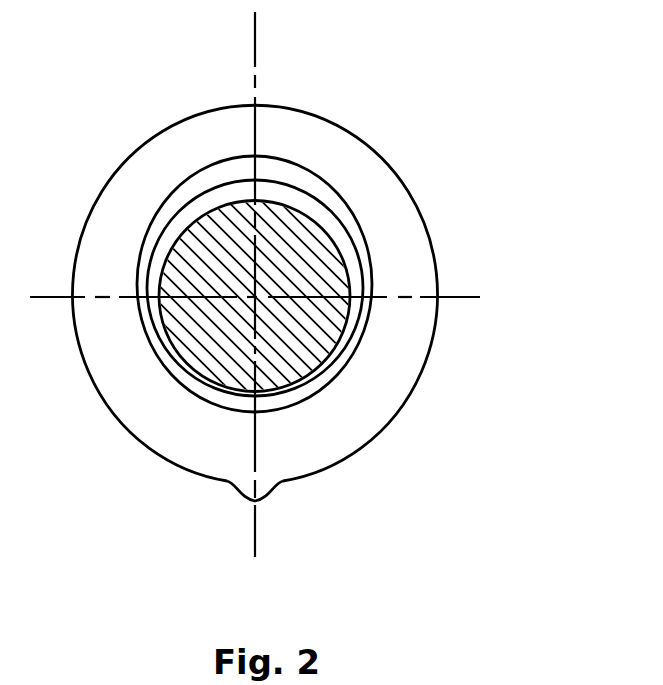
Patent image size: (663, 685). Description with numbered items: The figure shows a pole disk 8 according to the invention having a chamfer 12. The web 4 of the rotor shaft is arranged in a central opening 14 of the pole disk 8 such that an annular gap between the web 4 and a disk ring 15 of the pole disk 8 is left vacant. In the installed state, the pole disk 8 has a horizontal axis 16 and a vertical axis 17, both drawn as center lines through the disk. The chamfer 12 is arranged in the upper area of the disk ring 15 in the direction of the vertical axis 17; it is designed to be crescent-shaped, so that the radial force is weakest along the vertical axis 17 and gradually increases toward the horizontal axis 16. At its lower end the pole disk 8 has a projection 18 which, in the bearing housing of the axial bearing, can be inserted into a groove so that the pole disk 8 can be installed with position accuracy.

The web 4 is at (290, 343).
The pole disk 8 is at (360, 453).
The chamfer 12 is at (203, 177).
The central opening 14 is at (185, 377).
The disk ring 15 is at (372, 180).
The horizontal axis 16 is at (462, 298).
The vertical axis 17 is at (253, 532).
The projection 18 is at (262, 484).